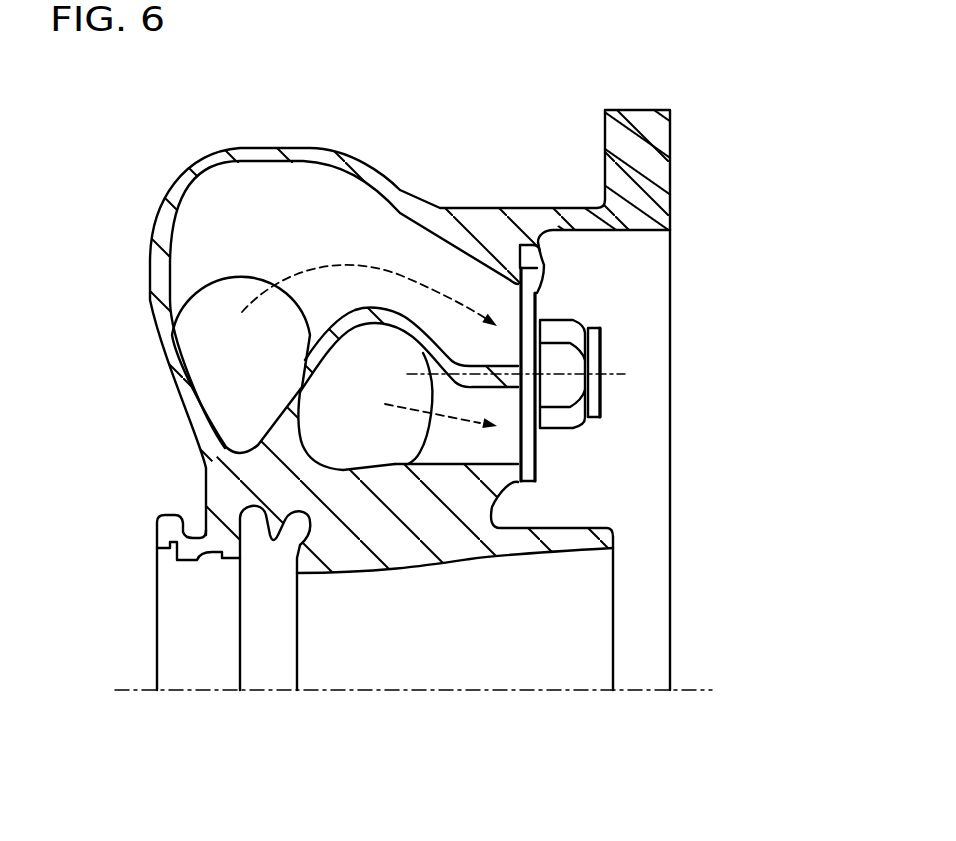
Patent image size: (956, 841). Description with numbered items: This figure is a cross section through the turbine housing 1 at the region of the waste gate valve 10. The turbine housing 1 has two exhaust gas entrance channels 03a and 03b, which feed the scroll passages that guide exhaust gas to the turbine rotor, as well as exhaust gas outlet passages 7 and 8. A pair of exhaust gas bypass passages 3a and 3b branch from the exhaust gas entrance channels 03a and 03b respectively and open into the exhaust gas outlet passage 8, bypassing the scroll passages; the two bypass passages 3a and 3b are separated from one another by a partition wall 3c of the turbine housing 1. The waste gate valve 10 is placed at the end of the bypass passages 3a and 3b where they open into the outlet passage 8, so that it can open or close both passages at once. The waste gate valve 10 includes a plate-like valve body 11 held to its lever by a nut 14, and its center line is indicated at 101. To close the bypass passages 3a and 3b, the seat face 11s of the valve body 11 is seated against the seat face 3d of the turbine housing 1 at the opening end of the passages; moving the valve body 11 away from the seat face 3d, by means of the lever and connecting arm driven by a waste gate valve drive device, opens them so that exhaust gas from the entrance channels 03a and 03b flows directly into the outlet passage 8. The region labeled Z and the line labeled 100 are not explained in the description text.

The turbine housing 1 is at (258, 155).
The exhaust gas bypass passage 3a is at (472, 300).
The exhaust gas bypass passage 3b is at (482, 443).
The partition wall 3c is at (477, 378).
The seat face 3d is at (546, 280).
The exhaust gas entrance channel 03a is at (204, 334).
The exhaust gas entrance channel 03b is at (322, 438).
The waste gate valve 10 is at (554, 283).
The seal region Z is at (590, 311).
The nut 14 is at (577, 333).
The center line 101 is at (562, 377).
The exhaust gas outlet passage 8 is at (632, 472).
The valve body 11 is at (538, 458).
The seat face 11s is at (515, 482).
The exhaust gas outlet passage 7 is at (542, 663).
The axis member 100 is at (350, 690).